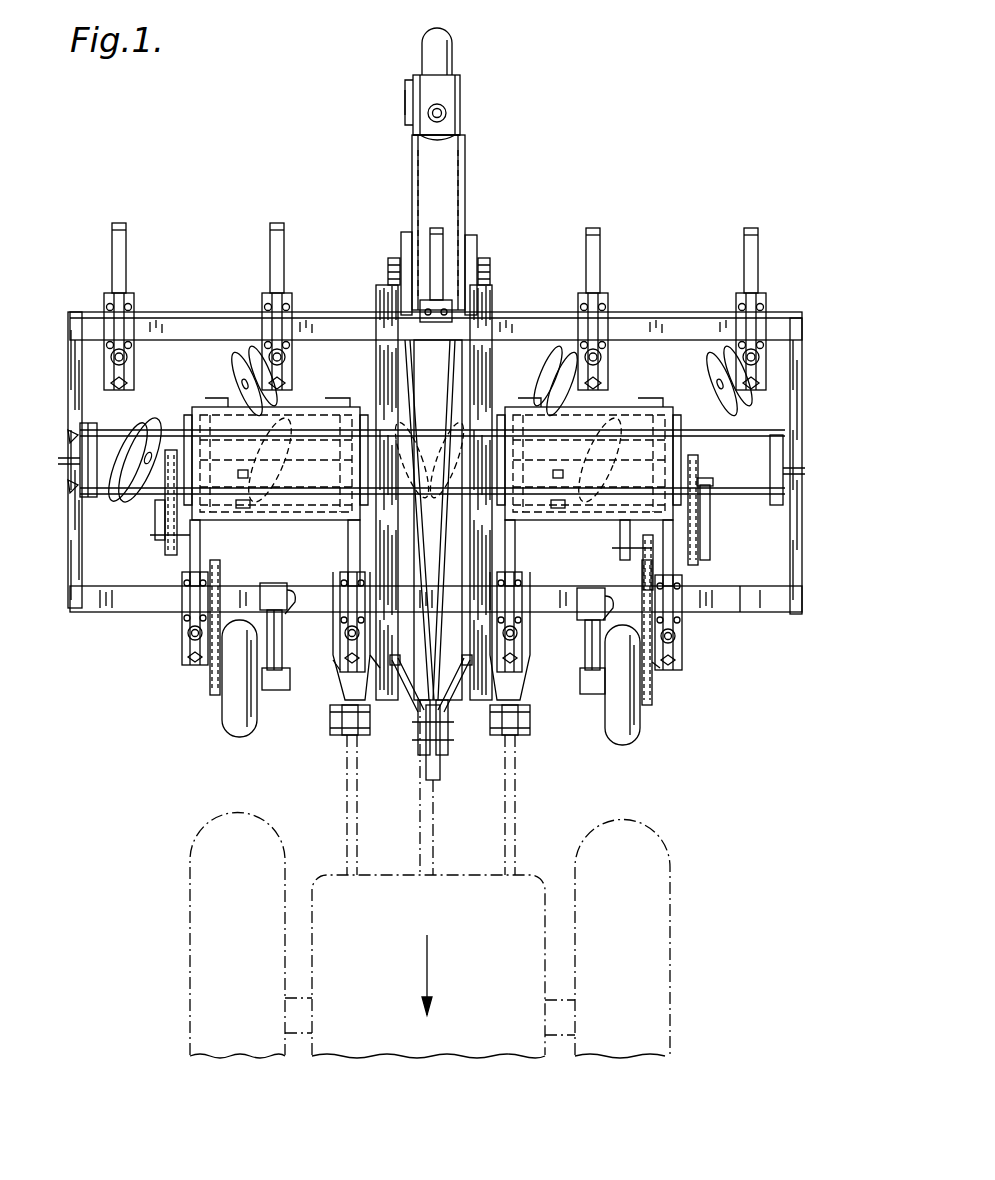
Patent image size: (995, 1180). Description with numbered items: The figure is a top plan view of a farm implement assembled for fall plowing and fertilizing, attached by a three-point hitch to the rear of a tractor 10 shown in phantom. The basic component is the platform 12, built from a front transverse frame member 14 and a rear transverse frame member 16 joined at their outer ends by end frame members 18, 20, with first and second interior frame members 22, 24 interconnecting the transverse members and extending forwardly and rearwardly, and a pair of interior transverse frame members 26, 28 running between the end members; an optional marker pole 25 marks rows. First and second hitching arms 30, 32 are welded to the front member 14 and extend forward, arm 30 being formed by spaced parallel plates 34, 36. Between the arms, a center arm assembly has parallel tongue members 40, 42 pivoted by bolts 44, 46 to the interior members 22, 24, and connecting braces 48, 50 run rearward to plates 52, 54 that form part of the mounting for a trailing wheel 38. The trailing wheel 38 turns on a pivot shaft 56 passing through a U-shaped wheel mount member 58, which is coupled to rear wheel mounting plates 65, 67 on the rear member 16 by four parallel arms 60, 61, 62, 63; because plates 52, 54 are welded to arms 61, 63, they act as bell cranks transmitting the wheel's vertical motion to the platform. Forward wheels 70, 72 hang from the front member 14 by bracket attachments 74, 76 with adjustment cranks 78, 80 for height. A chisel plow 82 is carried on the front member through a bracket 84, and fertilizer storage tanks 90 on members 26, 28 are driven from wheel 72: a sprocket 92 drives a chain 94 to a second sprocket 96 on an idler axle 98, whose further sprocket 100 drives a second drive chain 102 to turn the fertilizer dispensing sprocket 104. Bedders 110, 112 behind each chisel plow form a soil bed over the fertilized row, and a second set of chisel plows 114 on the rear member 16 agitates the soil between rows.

The tractor 10 is at (640, 822).
The platform 12 is at (728, 612).
The front transverse frame member 14 is at (758, 606).
The rear transverse frame member 16 is at (640, 330).
The end frame member 18 is at (790, 532).
The end frame member 20 is at (68, 546).
The first interior frame member 22 is at (376, 362).
The second interior frame member 24 is at (500, 362).
The marker pole 25 is at (72, 436).
The interior transverse frame member 26 is at (740, 500).
The interior transverse frame member 28 is at (730, 438).
The first hitching arm 30 is at (334, 695).
The second hitching arm 32 is at (530, 690).
The plate 34 is at (330, 672).
The plate 36 is at (370, 688).
The trailing wheel 38 is at (452, 52).
The first tongue member 40 is at (418, 722).
The second tongue member 42 is at (448, 724).
The bolt 44 is at (398, 662).
The bolt 46 is at (462, 662).
The connecting brace 48 is at (424, 560).
The connecting brace 50 is at (450, 560).
The plate 52 is at (401, 236).
The plate 54 is at (477, 240).
The pivot shaft 56 is at (403, 102).
The wheel mount member 58 is at (446, 106).
The arm 60 is at (412, 172).
The arm 61 is at (412, 208).
The arm 62 is at (465, 176).
The arm 63 is at (465, 200).
The rear wheel mounting plate 65 is at (388, 260).
The rear wheel mounting plate 67 is at (478, 272).
The forward wheel 70 is at (240, 730).
The forward wheel 72 is at (638, 726).
The bracket attachment 74 is at (282, 642).
The bracket attachment 76 is at (580, 644).
The adjustment crank 78 is at (287, 598).
The adjustment crank 80 is at (605, 603).
The chisel plow 82 is at (188, 566).
The bracket 84 is at (180, 614).
The storage tank 90 is at (192, 410).
The sprocket 92 is at (652, 705).
The chain 94 is at (655, 660).
The second sprocket 96 is at (620, 556).
The idler axle 98 is at (672, 560).
The sprocket 100 is at (708, 540).
The second drive chain 102 is at (700, 476).
The fertilizer dispensing sprocket 104 is at (712, 425).
The bedder 110 is at (125, 432).
The bedder 112 is at (238, 372).
The chisel plow 114 is at (130, 275).